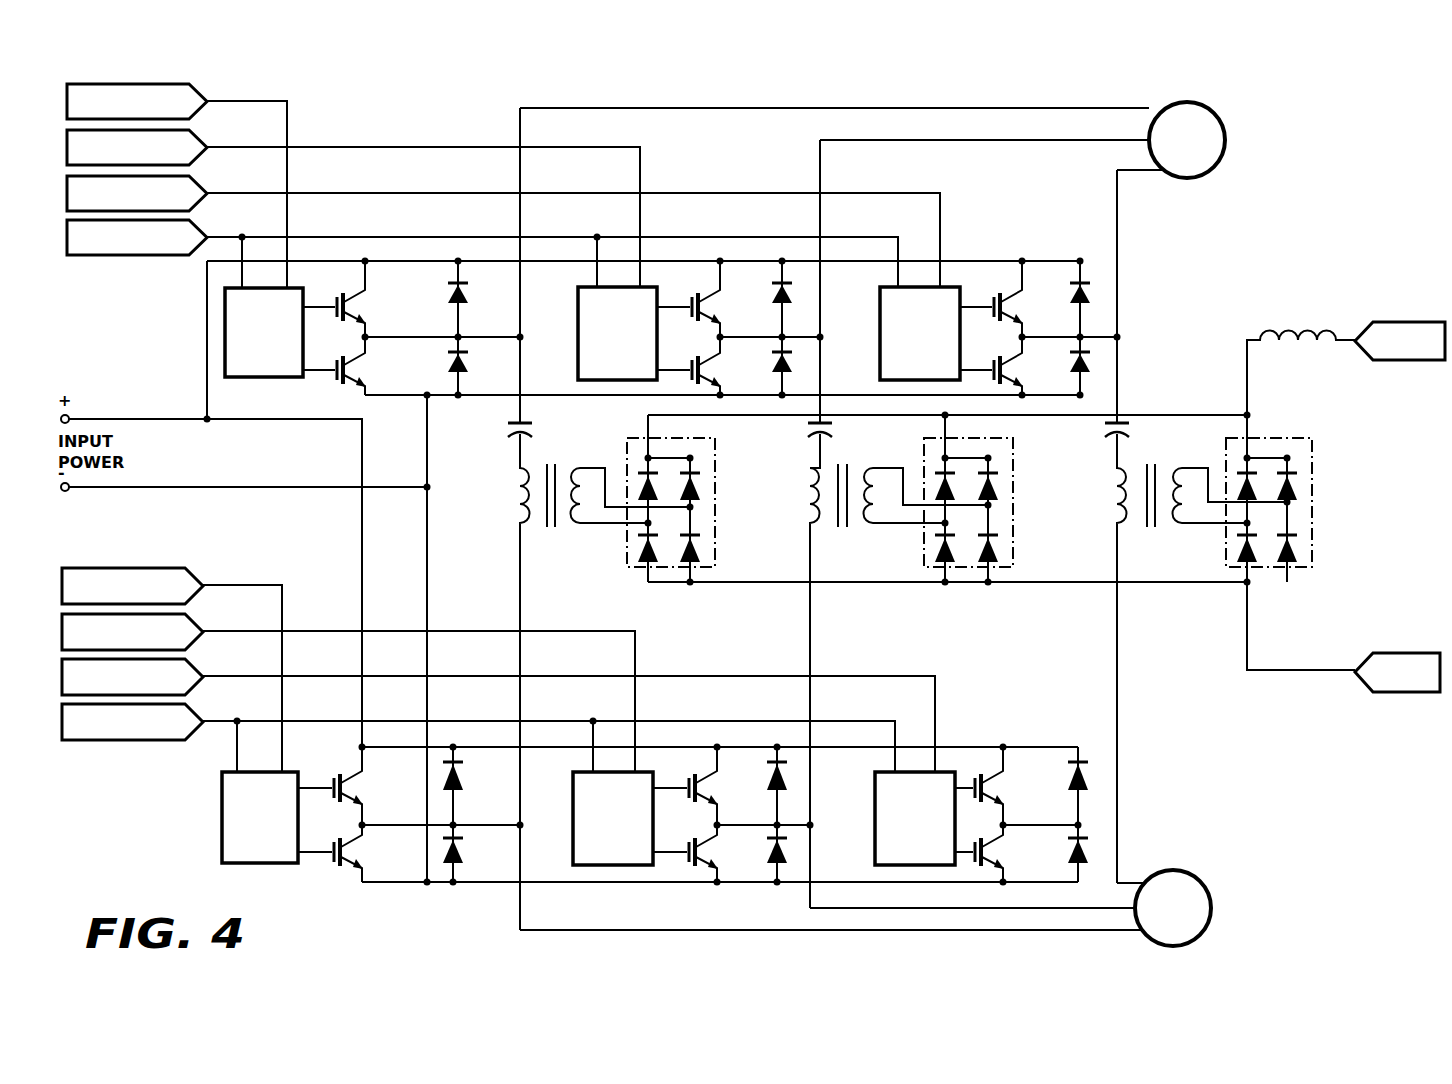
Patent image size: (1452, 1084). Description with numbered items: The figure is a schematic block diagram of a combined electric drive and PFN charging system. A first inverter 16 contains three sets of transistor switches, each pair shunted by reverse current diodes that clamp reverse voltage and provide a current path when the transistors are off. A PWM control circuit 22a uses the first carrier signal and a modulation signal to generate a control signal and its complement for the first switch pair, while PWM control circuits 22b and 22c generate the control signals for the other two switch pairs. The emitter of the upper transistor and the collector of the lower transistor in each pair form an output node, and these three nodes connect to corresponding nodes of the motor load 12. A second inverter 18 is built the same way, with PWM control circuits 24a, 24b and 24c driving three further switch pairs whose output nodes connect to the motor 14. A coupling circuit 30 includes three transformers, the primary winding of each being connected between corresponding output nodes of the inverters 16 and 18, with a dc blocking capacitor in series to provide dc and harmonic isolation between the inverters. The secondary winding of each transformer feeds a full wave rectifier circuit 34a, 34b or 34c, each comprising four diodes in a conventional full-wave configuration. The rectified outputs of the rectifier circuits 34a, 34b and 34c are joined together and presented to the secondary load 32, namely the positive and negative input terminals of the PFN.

The motor load 12 is at (1223, 136).
The motor 14 is at (1212, 918).
The inverter 16 is at (180, 353).
The inverter 18 is at (178, 836).
The PWM control circuit 22a is at (285, 346).
The PWM control circuit 22b is at (638, 346).
The PWM control circuit 22c is at (941, 346).
The PWM control circuit 24a is at (281, 831).
The PWM control circuit 24b is at (634, 831).
The PWM control circuit 24c is at (936, 831).
The coupling circuit 30 is at (478, 547).
The secondary load 32 is at (1424, 490).
The full wave rectifier circuit 34a is at (627, 554).
The full wave rectifier circuit 34b is at (922, 556).
The full wave rectifier circuit 34c is at (1224, 556).